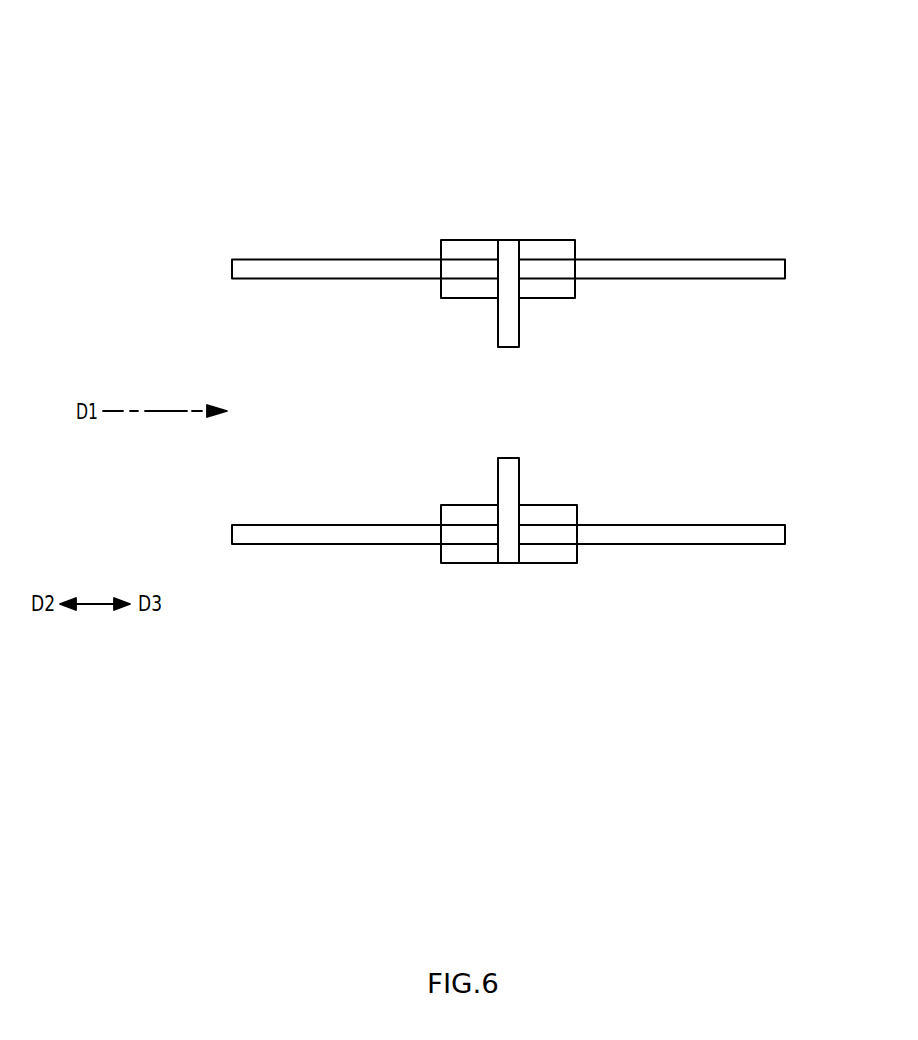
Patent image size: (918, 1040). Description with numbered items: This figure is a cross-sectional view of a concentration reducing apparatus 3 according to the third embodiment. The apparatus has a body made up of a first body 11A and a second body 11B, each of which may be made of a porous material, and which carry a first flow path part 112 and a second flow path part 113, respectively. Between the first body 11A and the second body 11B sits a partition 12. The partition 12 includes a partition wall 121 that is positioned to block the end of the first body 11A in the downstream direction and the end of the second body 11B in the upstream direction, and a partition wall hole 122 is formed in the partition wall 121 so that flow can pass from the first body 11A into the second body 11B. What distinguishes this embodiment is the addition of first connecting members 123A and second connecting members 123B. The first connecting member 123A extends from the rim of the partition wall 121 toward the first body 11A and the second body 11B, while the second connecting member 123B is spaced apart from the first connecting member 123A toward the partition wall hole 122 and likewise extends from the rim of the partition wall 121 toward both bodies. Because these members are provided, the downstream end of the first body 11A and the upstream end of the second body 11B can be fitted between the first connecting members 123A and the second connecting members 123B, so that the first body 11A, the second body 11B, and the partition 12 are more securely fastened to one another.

The concentration reducing apparatus 3 is at (188, 50).
The first body 11A is at (306, 267).
The second body 11B is at (696, 267).
The partition 12 is at (565, 168).
The partition wall 121 is at (502, 324).
The partition wall hole 122 is at (516, 399).
The first connecting member 123A is at (528, 245).
The second connecting member 123B is at (557, 287).
The first flow path part 112 is at (322, 416).
The second flow path part 113 is at (699, 411).